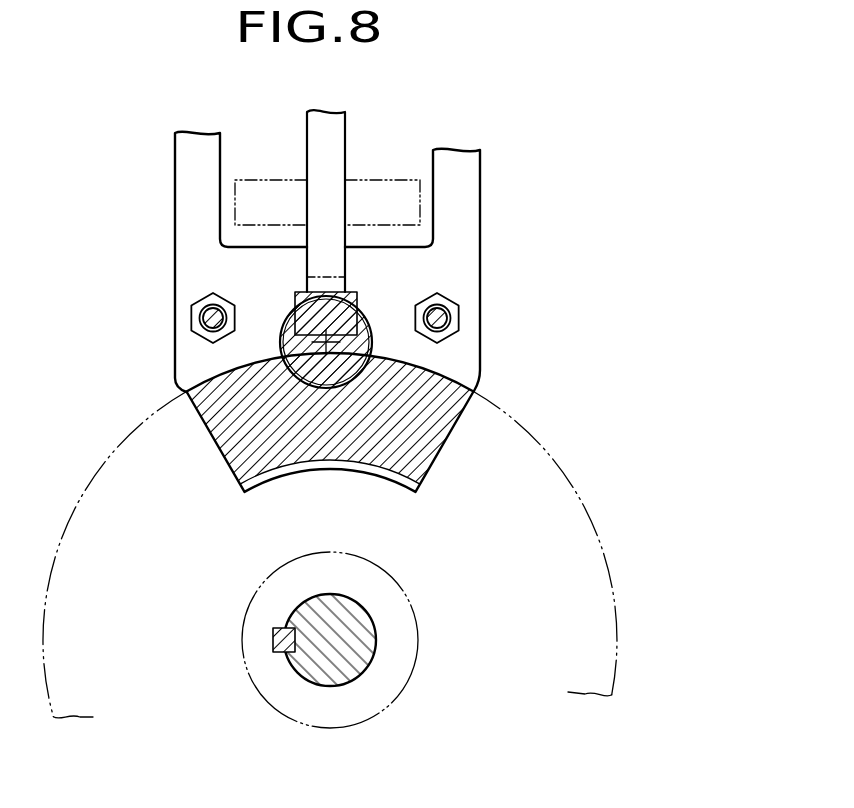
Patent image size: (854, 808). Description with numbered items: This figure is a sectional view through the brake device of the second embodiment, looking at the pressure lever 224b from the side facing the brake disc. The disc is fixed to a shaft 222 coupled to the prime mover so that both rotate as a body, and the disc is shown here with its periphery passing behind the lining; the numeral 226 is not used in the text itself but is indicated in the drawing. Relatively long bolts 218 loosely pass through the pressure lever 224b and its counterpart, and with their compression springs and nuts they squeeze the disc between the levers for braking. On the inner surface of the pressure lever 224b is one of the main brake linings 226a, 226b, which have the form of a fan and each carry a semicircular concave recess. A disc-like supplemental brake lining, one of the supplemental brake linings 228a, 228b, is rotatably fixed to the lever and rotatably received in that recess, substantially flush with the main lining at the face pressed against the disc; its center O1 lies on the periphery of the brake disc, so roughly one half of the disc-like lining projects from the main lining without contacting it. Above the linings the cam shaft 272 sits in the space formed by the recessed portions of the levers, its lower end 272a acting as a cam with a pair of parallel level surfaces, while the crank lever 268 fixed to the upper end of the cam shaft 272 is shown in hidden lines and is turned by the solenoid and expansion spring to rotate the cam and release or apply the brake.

The bolts 218 is at (200, 320).
The shaft 222 is at (350, 670).
The pressure lever 224b is at (188, 193).
The brake disc 226 is at (537, 523).
The main brake lining 226a is at (450, 414).
The main brake lining 226b is at (347, 343).
The supplemental brake lining 228a is at (450, 414).
The supplemental brake lining 228b is at (450, 414).
The crank lever 268 is at (293, 197).
The cam shaft 272 is at (333, 135).
The lower end of the cam shaft 272a is at (445, 319).
The center of the disc like lining O1 is at (360, 305).